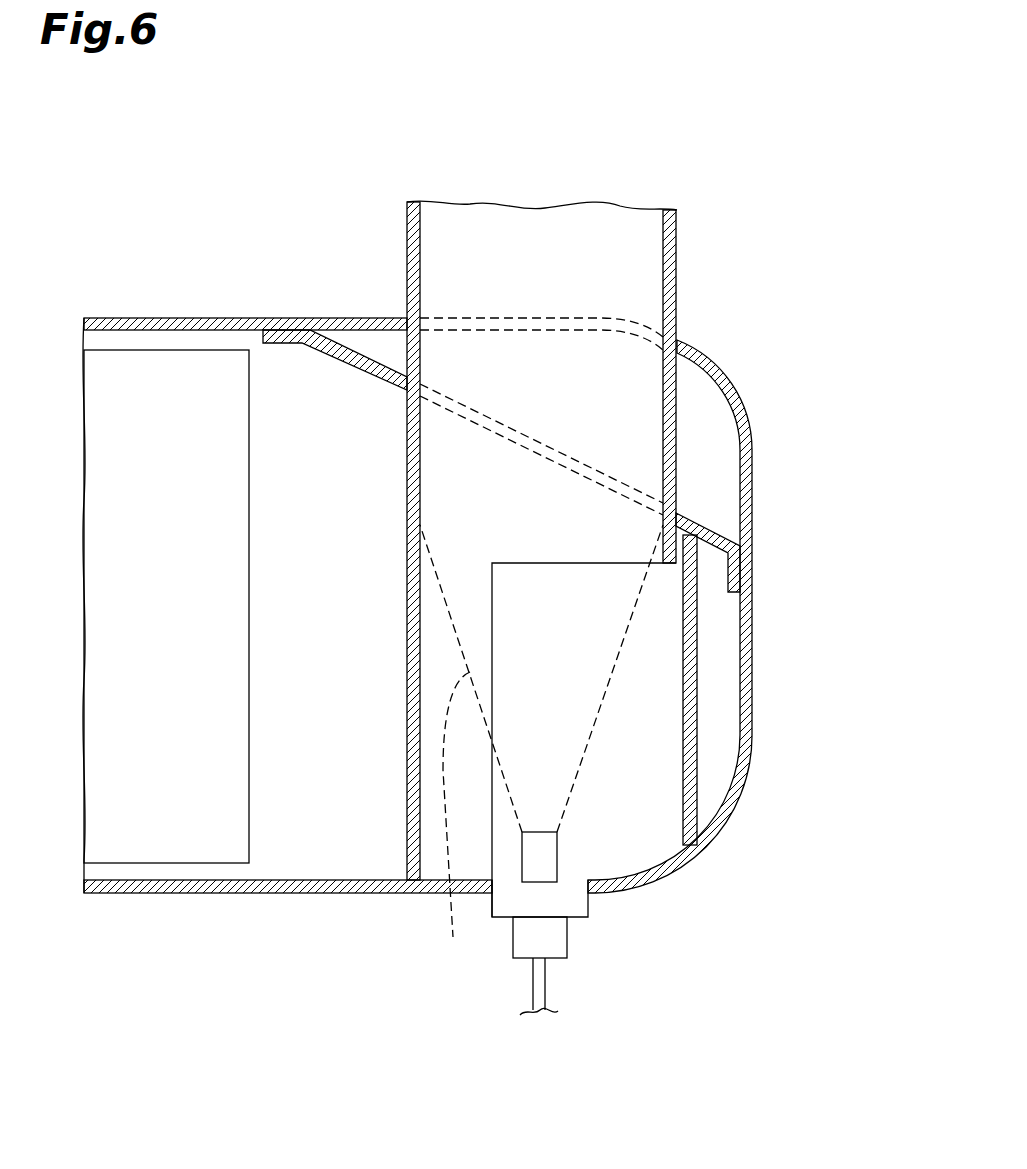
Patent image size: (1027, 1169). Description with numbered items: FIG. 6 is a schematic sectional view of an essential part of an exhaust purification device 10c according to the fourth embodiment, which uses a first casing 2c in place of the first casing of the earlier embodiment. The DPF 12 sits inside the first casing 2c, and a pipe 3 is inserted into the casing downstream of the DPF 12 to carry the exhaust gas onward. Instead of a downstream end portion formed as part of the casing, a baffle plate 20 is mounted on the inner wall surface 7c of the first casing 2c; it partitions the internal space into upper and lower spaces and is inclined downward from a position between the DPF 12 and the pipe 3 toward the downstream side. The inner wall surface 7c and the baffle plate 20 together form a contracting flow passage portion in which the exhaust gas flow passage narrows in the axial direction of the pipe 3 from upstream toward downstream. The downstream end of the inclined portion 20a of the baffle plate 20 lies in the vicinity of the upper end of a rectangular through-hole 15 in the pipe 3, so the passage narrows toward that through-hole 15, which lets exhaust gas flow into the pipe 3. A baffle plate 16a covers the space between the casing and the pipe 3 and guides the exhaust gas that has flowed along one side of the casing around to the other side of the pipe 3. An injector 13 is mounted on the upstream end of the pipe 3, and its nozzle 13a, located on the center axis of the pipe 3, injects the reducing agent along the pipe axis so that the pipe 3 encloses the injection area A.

The exhaust purification device 10c is at (717, 147).
The pipe 3 is at (681, 247).
The first casing 2c is at (192, 316).
The DPF 12 is at (130, 350).
The baffle plate 20 is at (376, 350).
The inclined portion 20a is at (350, 355).
The baffle plate 16a is at (700, 614).
The through-hole 15 is at (650, 692).
The nozzle 13a is at (548, 857).
The injector 13 is at (567, 938).
The inner wall surface 7c is at (326, 870).
The injection area A is at (456, 822).